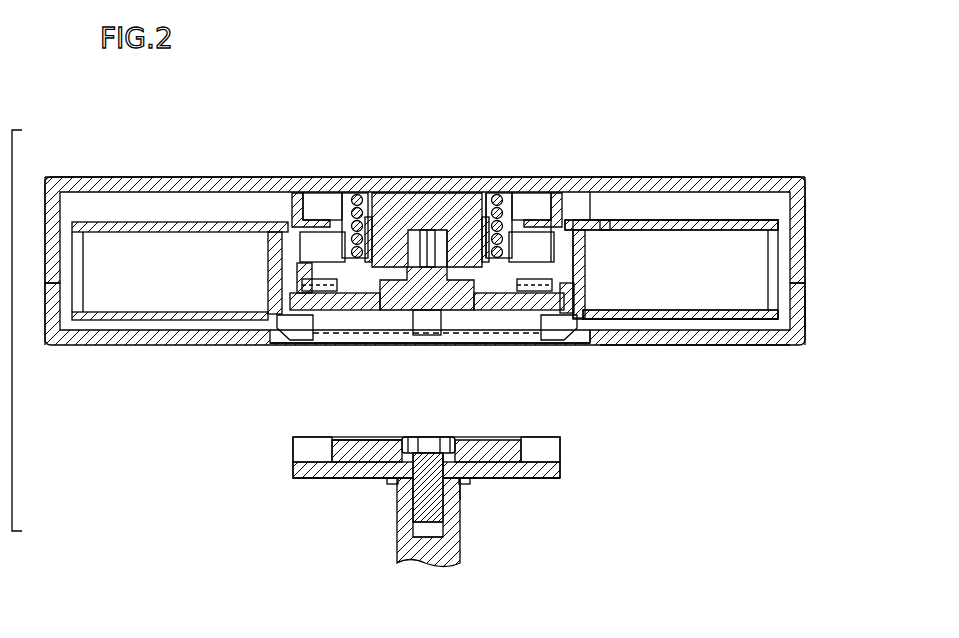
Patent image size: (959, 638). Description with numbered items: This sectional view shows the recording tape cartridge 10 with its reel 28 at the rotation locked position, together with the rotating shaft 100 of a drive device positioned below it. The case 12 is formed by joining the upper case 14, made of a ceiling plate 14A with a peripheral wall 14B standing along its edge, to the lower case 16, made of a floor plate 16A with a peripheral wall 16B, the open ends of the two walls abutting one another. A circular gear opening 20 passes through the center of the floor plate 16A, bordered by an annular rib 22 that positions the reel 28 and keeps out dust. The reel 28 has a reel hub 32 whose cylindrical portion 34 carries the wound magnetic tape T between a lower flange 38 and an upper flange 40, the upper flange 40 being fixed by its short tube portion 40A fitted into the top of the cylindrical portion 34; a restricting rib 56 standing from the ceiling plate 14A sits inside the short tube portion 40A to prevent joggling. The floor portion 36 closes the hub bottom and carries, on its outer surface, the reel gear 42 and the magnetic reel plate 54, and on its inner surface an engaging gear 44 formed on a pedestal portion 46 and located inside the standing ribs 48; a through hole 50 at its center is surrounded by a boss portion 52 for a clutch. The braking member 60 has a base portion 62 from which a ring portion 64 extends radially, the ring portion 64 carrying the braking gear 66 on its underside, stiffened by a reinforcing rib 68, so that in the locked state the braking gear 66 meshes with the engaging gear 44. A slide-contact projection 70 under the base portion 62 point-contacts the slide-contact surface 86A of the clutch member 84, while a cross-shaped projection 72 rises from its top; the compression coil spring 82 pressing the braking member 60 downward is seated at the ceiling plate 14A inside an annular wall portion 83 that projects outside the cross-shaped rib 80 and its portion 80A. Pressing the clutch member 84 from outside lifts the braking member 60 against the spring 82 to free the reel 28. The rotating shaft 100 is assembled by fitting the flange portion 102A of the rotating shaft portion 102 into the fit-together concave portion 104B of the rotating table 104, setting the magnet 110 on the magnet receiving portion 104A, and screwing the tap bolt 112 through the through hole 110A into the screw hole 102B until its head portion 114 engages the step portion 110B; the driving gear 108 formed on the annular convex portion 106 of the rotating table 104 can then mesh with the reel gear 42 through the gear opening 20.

The recording tape cartridge 10 is at (592, 104).
The case 12 is at (868, 235).
The upper case 14 is at (804, 240).
The ceiling plate 14A is at (680, 185).
The peripheral wall 14B is at (803, 186).
The lower case 16 is at (804, 320).
The floor plate 16A is at (712, 340).
The peripheral wall 16B is at (803, 333).
The gear opening 20 is at (572, 345).
The annular rib 22 is at (596, 330).
The reel 28 is at (617, 225).
The reel hub 32 is at (640, 238).
The cylindrical portion 34 is at (584, 270).
The floor portion 36 is at (586, 302).
The lower flange 38 is at (700, 314).
The upper flange 40 is at (698, 232).
The short tube portion 40A is at (610, 220).
The reel gear 42 is at (290, 340).
The engaging gear 44 is at (297, 284).
The pedestal portion 46 is at (320, 310).
The standing ribs 48 is at (318, 247).
The through hole 50 is at (455, 300).
The boss portion for a clutch 52 is at (385, 337).
The reel plate 54 is at (530, 311).
The restricting rib 56 is at (553, 200).
The braking member 60 is at (320, 210).
The base portion 62 is at (369, 230).
The ring portion 64 is at (300, 200).
The braking gear 66 is at (305, 283).
The reinforcing rib 68 is at (565, 248).
The slide-contact projection 70 is at (428, 232).
The cross-shaped projection 72 is at (488, 235).
The cross-shaped rib 80 is at (405, 210).
The block side surface 80A is at (462, 215).
The compression coil spring 82 is at (505, 230).
The annular wall portion 83 is at (357, 200).
The clutch member 84 is at (430, 335).
The slide-contact surface 86A is at (445, 245).
The magnetic tape T is at (160, 250).
The rotating shaft 100 is at (562, 477).
The rotating shaft portion 102 is at (455, 535).
The flange portion 102A is at (467, 480).
The screw hole 102B is at (425, 540).
The rotating table 104 is at (523, 478).
The magnet receiving portion 104A is at (470, 482).
The fit-together concave portion 104B is at (393, 484).
The annular convex portion 106 is at (562, 469).
The driving gear 108 is at (293, 450).
The magnet 110 is at (353, 478).
The through hole 110A is at (447, 470).
The step portion 110B is at (398, 452).
The tap bolt 112 is at (410, 535).
The head portion 114 is at (428, 440).